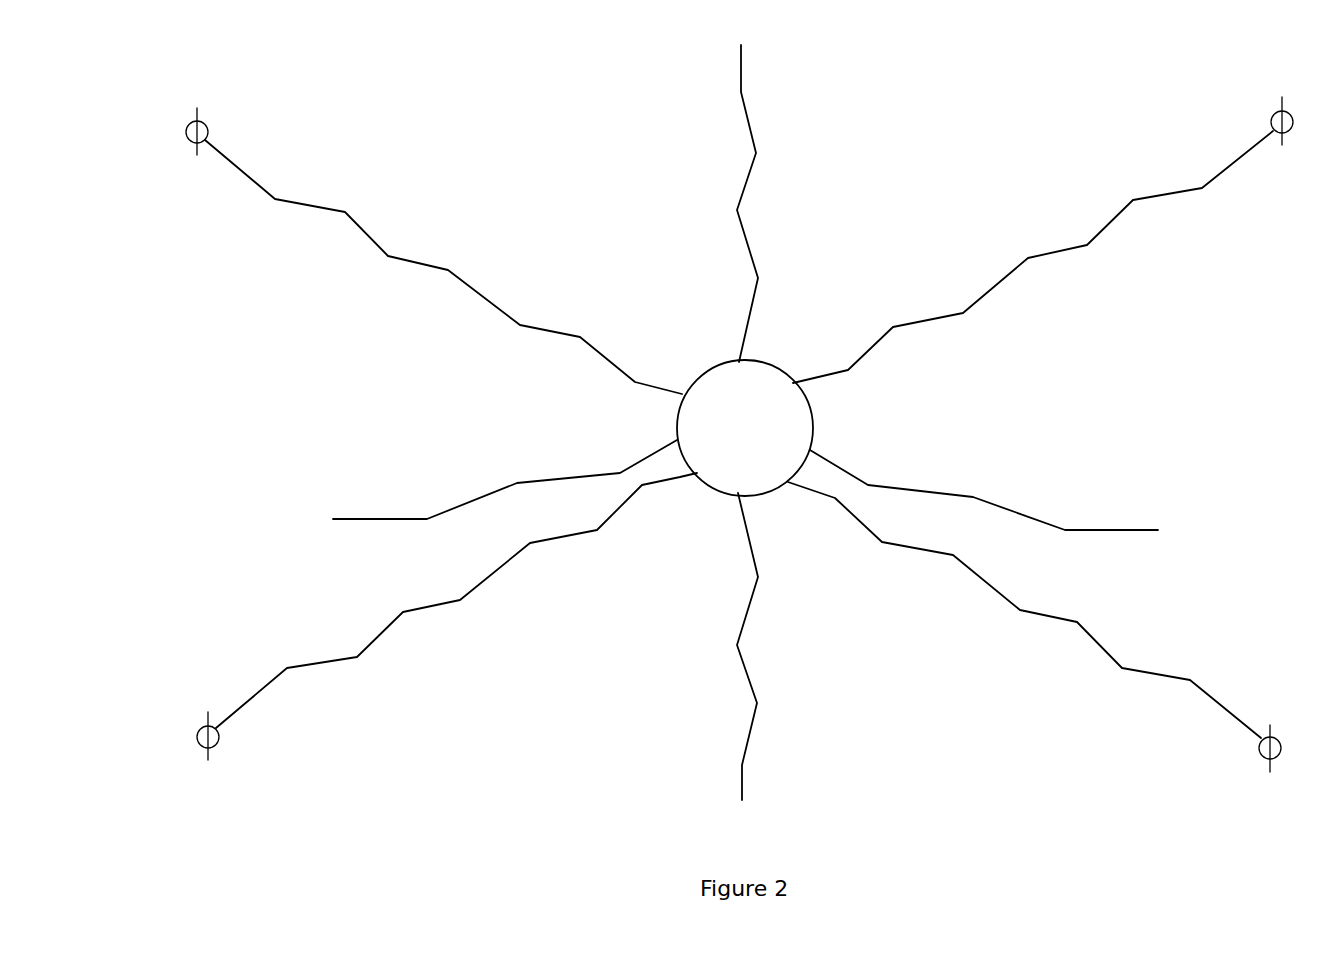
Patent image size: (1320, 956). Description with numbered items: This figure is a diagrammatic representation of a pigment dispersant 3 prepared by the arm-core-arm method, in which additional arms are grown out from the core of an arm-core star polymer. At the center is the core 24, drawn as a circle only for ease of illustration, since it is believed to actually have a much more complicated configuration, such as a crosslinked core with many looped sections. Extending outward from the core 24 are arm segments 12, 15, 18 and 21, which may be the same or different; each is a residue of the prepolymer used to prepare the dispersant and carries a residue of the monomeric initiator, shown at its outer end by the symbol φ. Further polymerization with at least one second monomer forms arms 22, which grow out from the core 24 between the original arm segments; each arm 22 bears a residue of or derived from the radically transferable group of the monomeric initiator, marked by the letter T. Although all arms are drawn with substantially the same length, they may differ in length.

The core segment 24 is at (813, 427).
The arm segment 21 is at (373, 240).
The arm segment 12 is at (1100, 233).
The arm segment 15 is at (1090, 637).
The arm segment 18 is at (450, 600).
The arm 22 is at (756, 153).
The pigment dispersant 3 is at (244, 462).